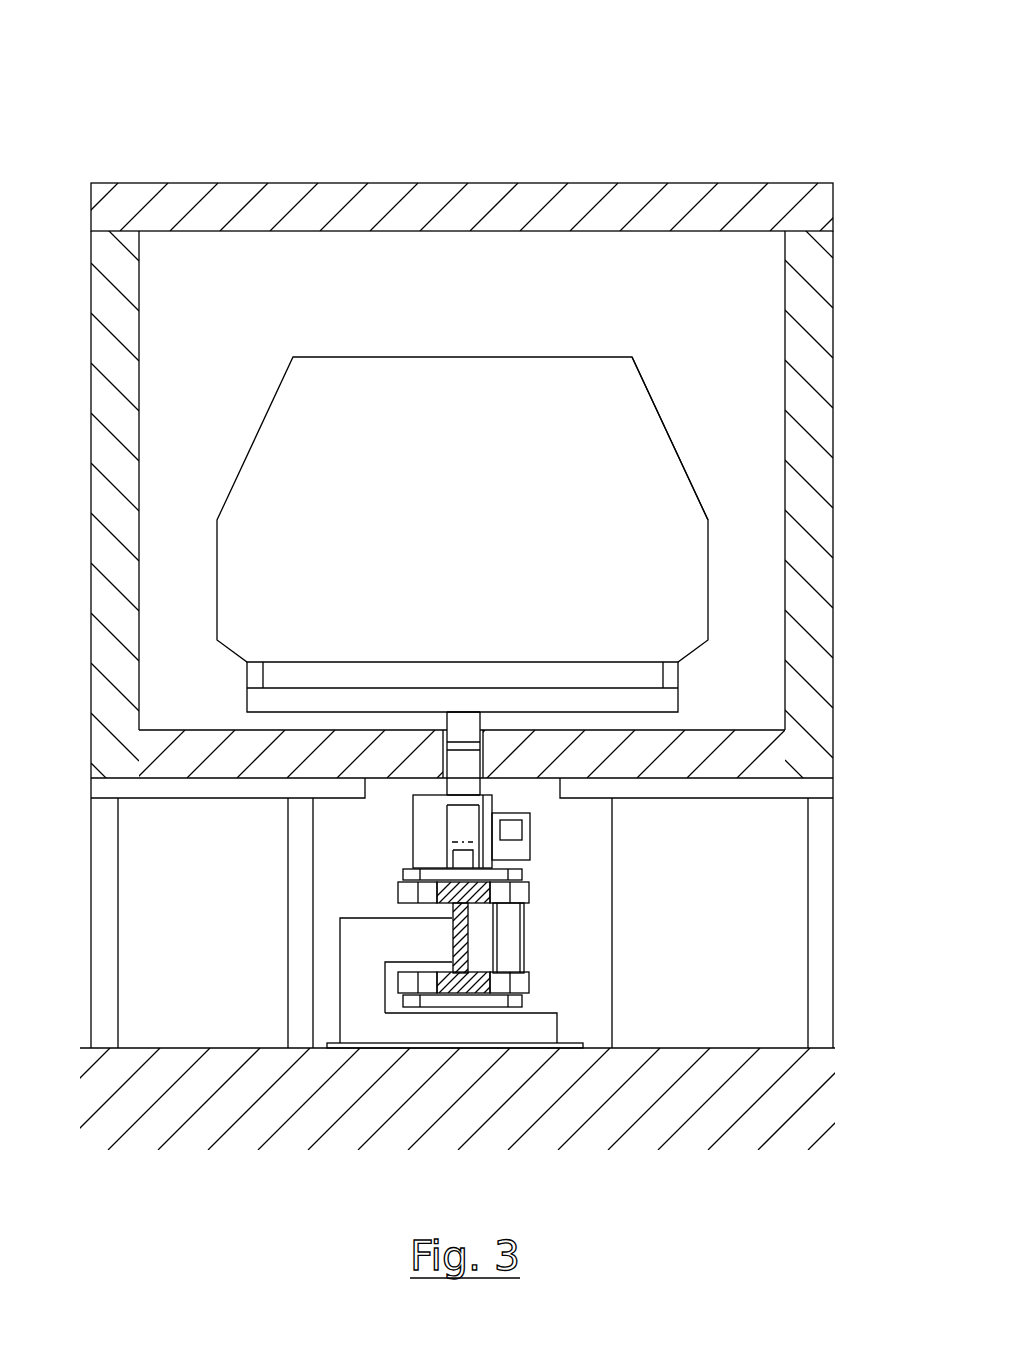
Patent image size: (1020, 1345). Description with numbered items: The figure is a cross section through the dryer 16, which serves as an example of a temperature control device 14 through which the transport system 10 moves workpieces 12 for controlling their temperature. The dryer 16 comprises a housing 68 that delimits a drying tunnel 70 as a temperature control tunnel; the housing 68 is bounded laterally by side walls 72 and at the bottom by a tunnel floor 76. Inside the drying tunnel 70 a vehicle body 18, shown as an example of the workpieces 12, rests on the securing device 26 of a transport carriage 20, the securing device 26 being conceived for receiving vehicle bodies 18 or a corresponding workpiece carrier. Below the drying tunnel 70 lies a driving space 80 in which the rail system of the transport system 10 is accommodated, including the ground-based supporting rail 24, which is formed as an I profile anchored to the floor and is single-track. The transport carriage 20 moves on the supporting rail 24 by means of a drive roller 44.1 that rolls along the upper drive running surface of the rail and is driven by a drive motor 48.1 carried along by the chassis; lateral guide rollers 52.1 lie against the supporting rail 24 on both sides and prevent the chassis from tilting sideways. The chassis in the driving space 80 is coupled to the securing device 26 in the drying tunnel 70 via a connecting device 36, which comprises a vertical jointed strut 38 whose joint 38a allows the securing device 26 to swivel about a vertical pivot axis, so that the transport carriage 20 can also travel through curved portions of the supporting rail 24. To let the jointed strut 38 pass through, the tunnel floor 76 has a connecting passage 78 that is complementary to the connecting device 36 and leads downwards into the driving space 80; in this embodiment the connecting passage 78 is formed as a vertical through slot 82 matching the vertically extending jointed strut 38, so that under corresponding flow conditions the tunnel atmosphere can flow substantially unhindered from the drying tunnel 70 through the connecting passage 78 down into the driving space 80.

The transport system 10 is at (588, 904).
The workpieces 12 is at (578, 368).
The temperature control device 14 is at (376, 110).
The dryer 16 is at (498, 118).
The vehicle bodies 18 is at (625, 405).
The transport carriage 20 is at (543, 952).
The supporting rail 24 is at (463, 982).
The securing device 26 is at (676, 678).
The connecting device 36 is at (443, 724).
The jointed strut 38 is at (455, 765).
The joint 38a is at (483, 765).
The drive roller 44.1 is at (457, 830).
The drive motor 48.1 is at (529, 823).
The lateral guide rollers 52.1 is at (405, 892).
The housing 68 is at (637, 158).
The drying tunnel 70 is at (500, 282).
The side walls 72 is at (128, 390).
The tunnel floor 76 is at (152, 740).
The connecting passage 78 is at (460, 724).
The driving space 80 is at (590, 879).
The vertical through slot 82 is at (479, 745).